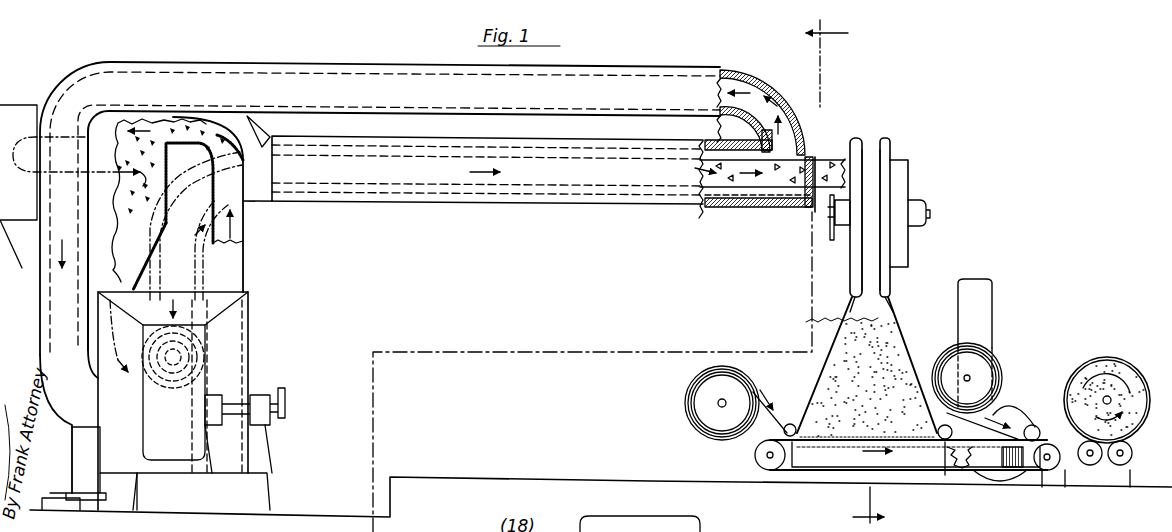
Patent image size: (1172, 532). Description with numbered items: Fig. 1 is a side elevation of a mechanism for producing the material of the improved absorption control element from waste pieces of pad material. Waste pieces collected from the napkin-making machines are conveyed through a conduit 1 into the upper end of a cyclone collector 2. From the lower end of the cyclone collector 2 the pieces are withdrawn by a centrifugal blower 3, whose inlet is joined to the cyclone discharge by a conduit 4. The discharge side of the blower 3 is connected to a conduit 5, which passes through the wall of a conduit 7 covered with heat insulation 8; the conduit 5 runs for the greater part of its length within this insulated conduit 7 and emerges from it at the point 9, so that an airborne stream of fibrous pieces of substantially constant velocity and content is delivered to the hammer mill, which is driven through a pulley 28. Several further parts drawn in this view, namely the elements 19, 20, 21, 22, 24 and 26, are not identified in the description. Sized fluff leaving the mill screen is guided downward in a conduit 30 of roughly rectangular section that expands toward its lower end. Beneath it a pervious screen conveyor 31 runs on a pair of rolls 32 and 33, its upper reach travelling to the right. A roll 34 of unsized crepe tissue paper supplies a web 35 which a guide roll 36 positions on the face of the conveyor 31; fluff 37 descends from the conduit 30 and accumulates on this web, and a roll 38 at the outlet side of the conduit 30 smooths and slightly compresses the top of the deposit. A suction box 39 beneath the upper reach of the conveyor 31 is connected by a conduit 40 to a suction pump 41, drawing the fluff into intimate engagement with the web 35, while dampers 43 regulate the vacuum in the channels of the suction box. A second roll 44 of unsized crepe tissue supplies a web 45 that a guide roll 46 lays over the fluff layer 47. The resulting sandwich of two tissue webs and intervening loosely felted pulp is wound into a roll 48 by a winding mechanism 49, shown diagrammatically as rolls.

The conduit 1 is at (240, 253).
The cyclone collector 2 is at (48, 122).
The centrifugal blower 3 is at (72, 432).
The conduit 4 is at (100, 470).
The conduit 5 is at (720, 197).
The conduit 7 is at (745, 206).
The heat insulation 8 is at (768, 206).
The emergence point of conduit 9 is at (818, 160).
The feed opening 19 is at (705, 172).
The separator housing 20 is at (248, 312).
The cyclone chamber 21 is at (200, 388).
The return duct bend 22 is at (780, 84).
The deflector 24 is at (254, 131).
The feeding machine 26 is at (875, 157).
The pulley 28 is at (828, 215).
The conduit 30 is at (900, 355).
The pervious conveyor 31 is at (803, 472).
The roll 32 is at (756, 458).
The roll 33 is at (1045, 464).
The roll of unsized crepe tissue paper 34 is at (690, 420).
The tissue paper web 35 is at (768, 420).
The guide roll 36 is at (780, 434).
The fluff 37 is at (848, 356).
The roll 38 is at (922, 428).
The suction box 39 is at (851, 456).
The conduit 40 is at (1005, 462).
The suction pump 41 is at (1000, 410).
The dampers 43 is at (960, 470).
The roll of unsized crepe tissue paper 44 is at (985, 352).
The tissue paper web 45 is at (1014, 407).
The guide roll 46 is at (1036, 426).
The fluff layer 47 is at (1090, 466).
The roll 48 is at (1105, 357).
The winding mechanism 49 is at (1120, 466).